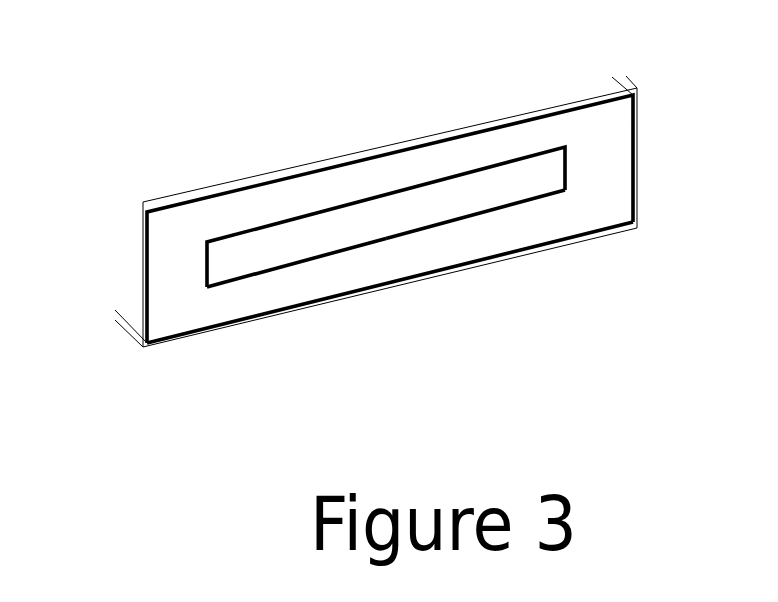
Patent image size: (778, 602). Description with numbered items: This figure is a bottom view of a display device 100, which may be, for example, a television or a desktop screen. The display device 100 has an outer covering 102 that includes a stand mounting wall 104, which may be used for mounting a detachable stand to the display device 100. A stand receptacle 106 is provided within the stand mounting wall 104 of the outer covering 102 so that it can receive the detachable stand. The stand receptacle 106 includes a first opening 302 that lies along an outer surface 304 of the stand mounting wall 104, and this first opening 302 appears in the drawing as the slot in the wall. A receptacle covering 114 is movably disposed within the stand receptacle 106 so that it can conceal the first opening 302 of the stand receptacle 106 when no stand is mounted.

The display device 100 is at (321, 82).
The outer covering 102 is at (143, 202).
The stand mounting wall 104 is at (433, 262).
The stand receptacle 106 is at (540, 210).
The receptacle covering 114 is at (400, 212).
The first opening 302 is at (240, 294).
The outer surface 304 is at (583, 172).